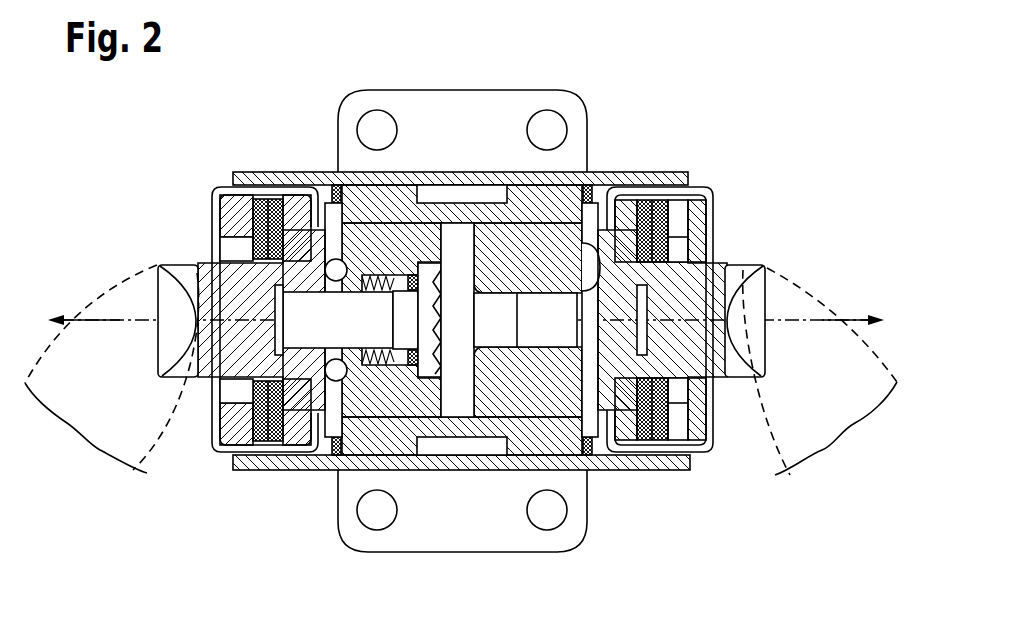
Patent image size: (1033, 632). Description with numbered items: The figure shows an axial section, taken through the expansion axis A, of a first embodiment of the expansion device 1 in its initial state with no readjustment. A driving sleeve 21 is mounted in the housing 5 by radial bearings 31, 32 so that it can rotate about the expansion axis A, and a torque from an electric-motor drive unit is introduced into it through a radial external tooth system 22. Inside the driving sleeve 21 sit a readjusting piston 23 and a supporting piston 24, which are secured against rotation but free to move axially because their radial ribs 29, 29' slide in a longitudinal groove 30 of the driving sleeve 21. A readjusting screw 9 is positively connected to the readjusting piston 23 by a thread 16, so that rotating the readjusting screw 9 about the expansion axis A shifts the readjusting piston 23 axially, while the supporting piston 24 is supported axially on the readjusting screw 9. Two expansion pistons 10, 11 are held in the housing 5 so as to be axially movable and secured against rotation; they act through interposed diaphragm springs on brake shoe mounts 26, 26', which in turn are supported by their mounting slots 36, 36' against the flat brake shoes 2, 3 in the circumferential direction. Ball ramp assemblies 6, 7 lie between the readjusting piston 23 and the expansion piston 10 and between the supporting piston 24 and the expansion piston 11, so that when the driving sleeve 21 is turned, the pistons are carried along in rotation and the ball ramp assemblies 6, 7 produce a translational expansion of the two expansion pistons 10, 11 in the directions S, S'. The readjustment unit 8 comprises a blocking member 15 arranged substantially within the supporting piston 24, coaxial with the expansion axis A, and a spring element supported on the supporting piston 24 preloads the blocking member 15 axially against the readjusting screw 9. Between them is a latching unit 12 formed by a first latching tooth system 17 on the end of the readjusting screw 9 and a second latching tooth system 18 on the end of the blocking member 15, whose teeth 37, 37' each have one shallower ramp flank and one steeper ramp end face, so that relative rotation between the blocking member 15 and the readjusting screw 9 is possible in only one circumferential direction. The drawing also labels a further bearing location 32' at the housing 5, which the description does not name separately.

The expansion device 1 is at (670, 99).
The flat brake shoe 2 is at (807, 307).
The flat brake shoe 3 is at (122, 300).
The housing 5 is at (657, 172).
The ball ramp assembly 6 is at (620, 440).
The ball ramp assembly 7 is at (332, 440).
The readjustment unit 8 is at (420, 440).
The readjusting screw 9 is at (540, 185).
The expansion piston 10 is at (620, 410).
The expansion piston 11 is at (213, 445).
The latching unit 12 is at (453, 185).
The blocking member 15 is at (287, 450).
The thread 16 is at (533, 440).
The first latching tooth system 17 is at (450, 445).
The second latching tooth system 18 is at (425, 440).
The driving sleeve 21 is at (372, 205).
The radial external tooth system 22 is at (447, 440).
The readjusting piston 23 is at (570, 440).
The supporting piston 24 is at (318, 187).
The brake shoe mount 26 is at (694, 298).
The brake shoe mount 26' is at (205, 320).
The radial rib 29 is at (525, 104).
The radial rib 29' is at (363, 104).
The longitudinal groove 30 is at (447, 185).
The radial bearing 31 is at (362, 440).
The radial bearing 32 is at (472, 298).
The mounting hole 32' is at (396, 526).
The mounting slot 36 is at (767, 286).
The mounting slot 36' is at (162, 286).
The tooth 37 is at (575, 282).
The tooth 37' is at (303, 282).
The expansion axis A is at (787, 323).
The pivot direction S is at (853, 305).
The pivot direction S' is at (84, 305).